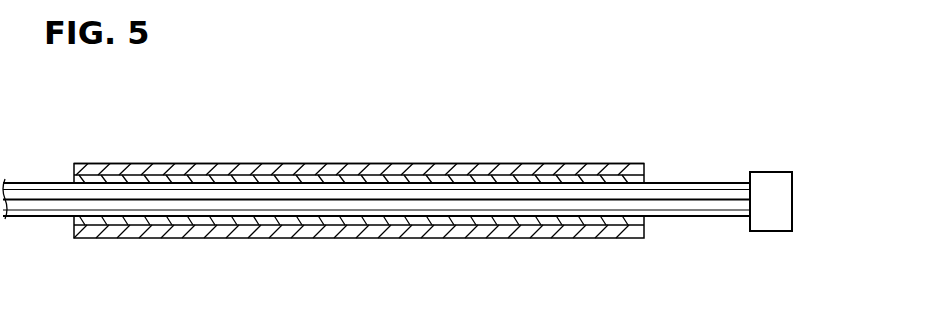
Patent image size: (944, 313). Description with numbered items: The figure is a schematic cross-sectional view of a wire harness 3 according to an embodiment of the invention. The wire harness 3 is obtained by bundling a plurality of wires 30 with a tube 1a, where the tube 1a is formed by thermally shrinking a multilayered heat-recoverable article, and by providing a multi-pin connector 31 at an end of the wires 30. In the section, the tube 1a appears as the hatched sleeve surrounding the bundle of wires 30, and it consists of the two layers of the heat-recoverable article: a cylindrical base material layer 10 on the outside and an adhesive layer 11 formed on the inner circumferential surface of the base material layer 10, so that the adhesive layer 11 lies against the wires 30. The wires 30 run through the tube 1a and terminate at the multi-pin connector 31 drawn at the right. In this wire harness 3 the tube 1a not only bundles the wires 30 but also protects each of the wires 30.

The wire harness 3 is at (359, 165).
The tube 1a is at (412, 163).
The base material layer 10 is at (316, 172).
The adhesive layer 11 is at (234, 180).
The wires 30 is at (689, 190).
The multi-pin connector 31 is at (768, 176).